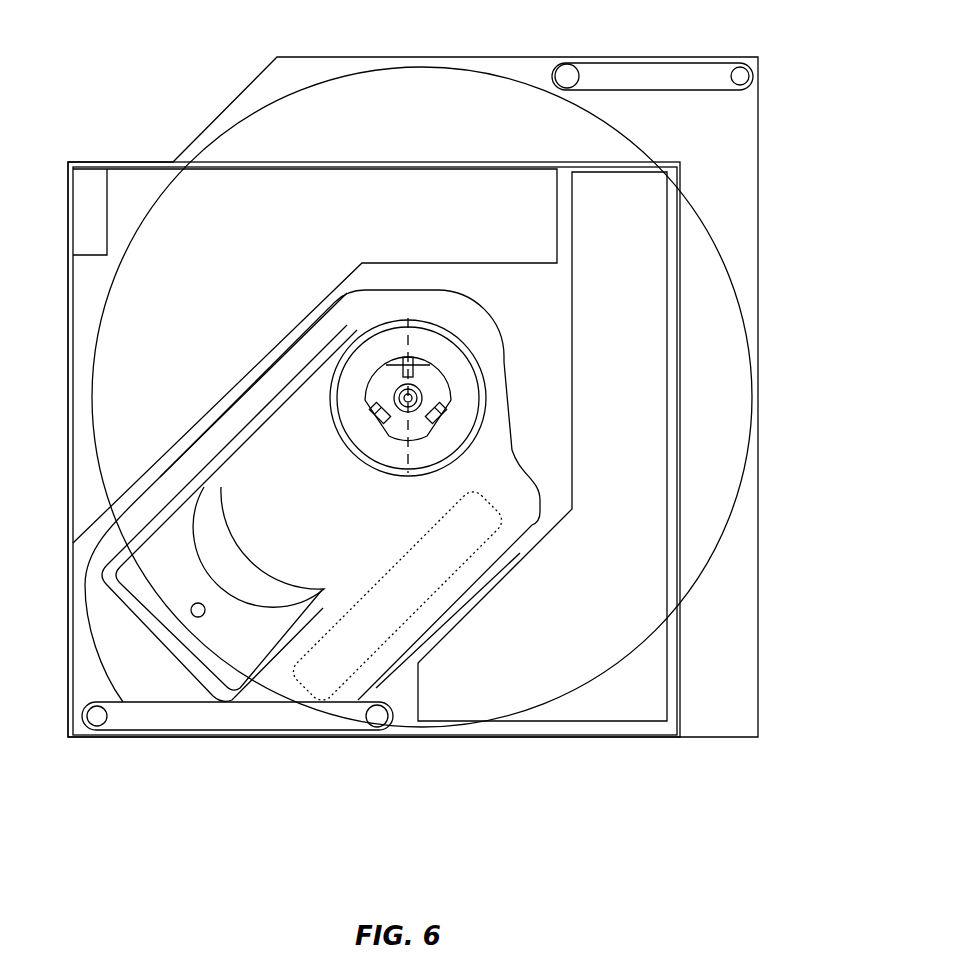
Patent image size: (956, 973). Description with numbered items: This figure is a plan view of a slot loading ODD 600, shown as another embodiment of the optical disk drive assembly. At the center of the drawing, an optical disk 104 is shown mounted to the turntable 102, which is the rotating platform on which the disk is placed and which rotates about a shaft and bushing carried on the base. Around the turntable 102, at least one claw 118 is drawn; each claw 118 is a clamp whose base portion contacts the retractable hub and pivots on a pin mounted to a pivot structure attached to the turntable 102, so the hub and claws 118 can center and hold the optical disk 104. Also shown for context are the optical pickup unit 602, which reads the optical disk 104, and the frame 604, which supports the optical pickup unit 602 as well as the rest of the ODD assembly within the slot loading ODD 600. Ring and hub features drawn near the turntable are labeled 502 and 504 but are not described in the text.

The slot loading ODD 600 is at (172, 123).
The optical disk 104 is at (270, 143).
The turntable 102 is at (427, 455).
The turntable ring 502 is at (407, 322).
The spindle hub 504 is at (365, 398).
The claw 118 is at (445, 406).
The optical pickup unit 602 is at (199, 660).
The frame 604 is at (157, 672).